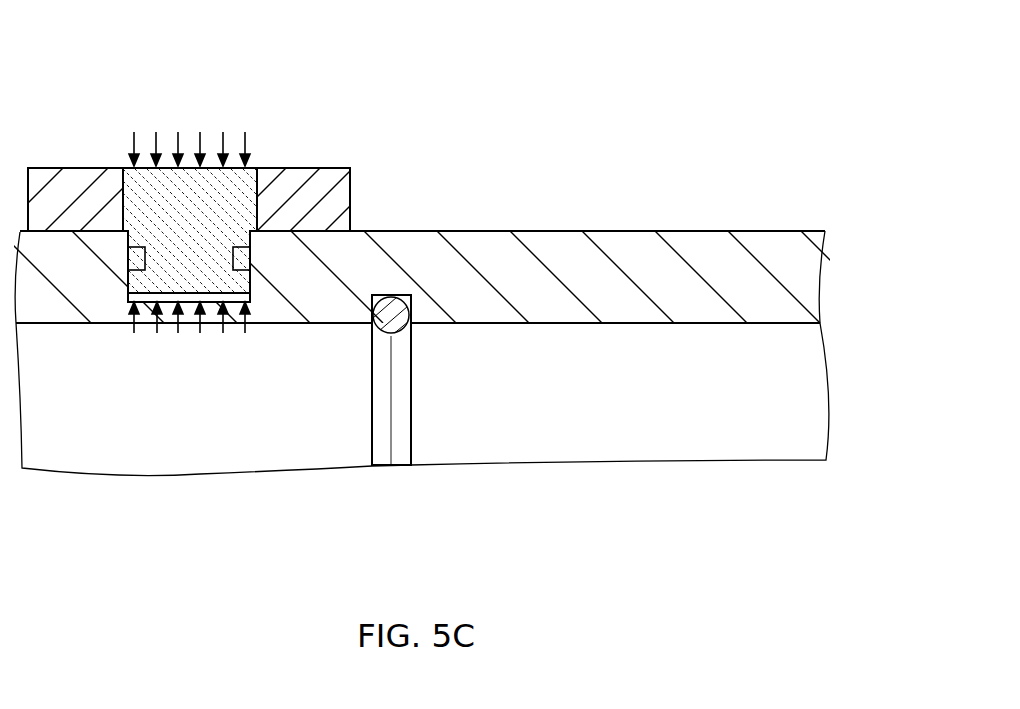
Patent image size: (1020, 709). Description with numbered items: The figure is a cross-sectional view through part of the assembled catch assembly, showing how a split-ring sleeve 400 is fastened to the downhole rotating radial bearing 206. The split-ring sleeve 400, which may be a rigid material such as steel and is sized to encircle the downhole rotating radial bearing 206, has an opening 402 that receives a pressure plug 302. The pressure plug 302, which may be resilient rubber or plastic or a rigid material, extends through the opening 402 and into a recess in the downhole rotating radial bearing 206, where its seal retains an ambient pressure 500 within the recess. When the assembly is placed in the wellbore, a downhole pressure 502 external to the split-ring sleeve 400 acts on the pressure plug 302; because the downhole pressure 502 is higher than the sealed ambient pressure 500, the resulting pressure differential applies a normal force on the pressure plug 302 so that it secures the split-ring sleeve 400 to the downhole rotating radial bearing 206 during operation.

The downhole rotating radial bearing 206 is at (547, 230).
The pressure plug 302 is at (255, 167).
The split-ring sleeve 400 is at (73, 167).
The opening 402 is at (243, 258).
The ambient pressure 500 is at (135, 342).
The downhole pressure 502 is at (245, 124).